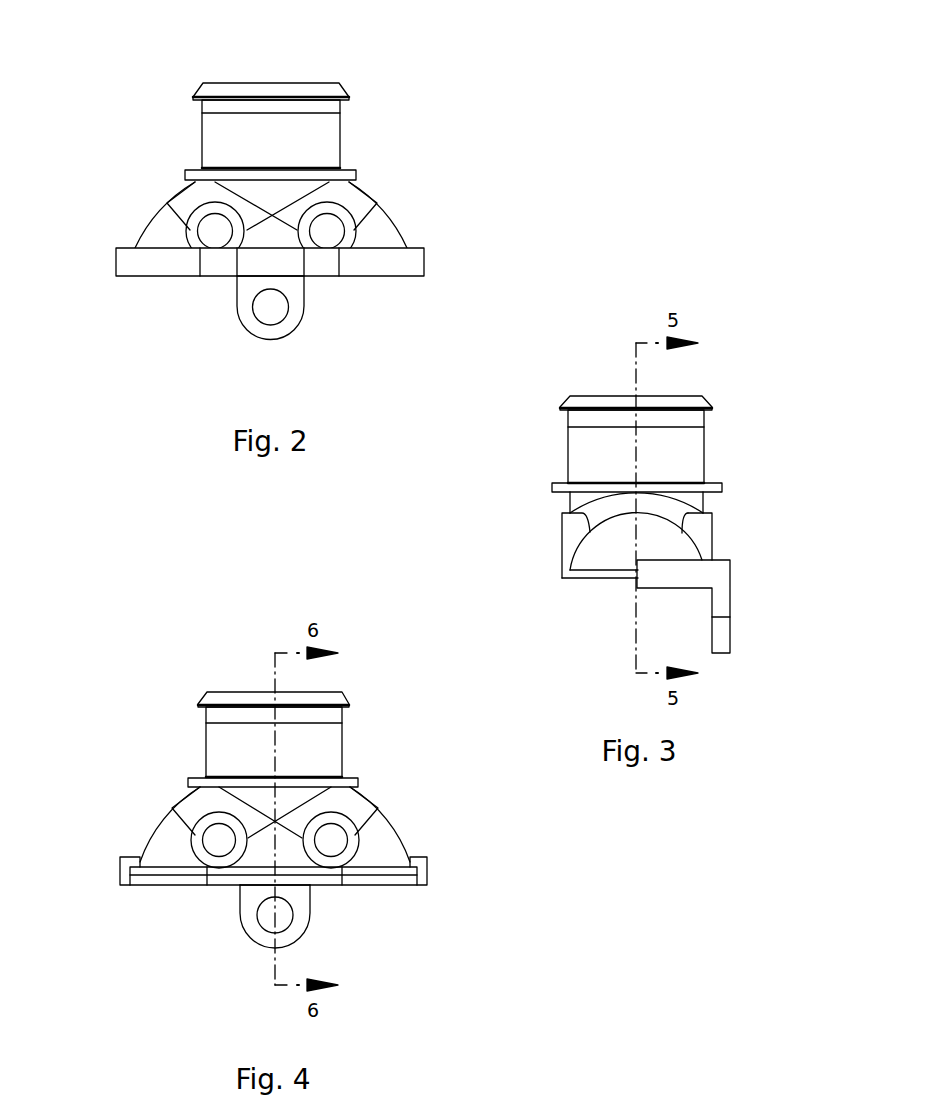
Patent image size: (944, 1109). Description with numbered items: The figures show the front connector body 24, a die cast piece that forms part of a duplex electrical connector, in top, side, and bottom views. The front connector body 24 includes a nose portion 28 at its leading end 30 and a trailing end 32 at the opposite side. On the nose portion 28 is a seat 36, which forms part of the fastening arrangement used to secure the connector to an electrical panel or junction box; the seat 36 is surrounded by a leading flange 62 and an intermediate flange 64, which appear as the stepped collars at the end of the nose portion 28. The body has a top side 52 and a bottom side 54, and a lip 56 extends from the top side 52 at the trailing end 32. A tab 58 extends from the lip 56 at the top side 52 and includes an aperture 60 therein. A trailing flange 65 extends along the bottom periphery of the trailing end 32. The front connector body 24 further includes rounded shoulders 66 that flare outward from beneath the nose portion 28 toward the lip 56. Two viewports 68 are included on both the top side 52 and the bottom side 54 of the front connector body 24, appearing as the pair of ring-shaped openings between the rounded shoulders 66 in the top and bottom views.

In FIG. 2, the front connector body 24 is at (126, 107).
In FIG. 3, the front connector body 24 is at (536, 430).
In FIG. 4, the front connector body 24 is at (140, 706).
In FIG. 2, the nose portion 28 is at (337, 140).
In FIG. 2, the leading end 30 is at (268, 83).
In FIG. 4, the leading end 30 is at (242, 692).
In FIG. 2, the trailing end 32 is at (320, 277).
In FIG. 4, the trailing end 32 is at (323, 885).
In FIG. 3, the seat 36 is at (661, 464).
In FIG. 3, the top side 52 is at (713, 533).
In FIG. 3, the bottom side 54 is at (562, 537).
In FIG. 4, the bottom side 54 is at (262, 858).
In FIG. 2, the lip 56 is at (424, 262).
In FIG. 4, the lip 56 is at (427, 871).
In FIG. 2, the tab 58 is at (257, 337).
In FIG. 4, the tab 58 is at (253, 943).
In FIG. 2, the aperture 60 is at (270, 307).
In FIG. 3, the leading flange 62 is at (712, 410).
In FIG. 3, the intermediate flange 64 is at (722, 488).
In FIG. 4, the trailing flange 65 is at (382, 882).
In FIG. 2, the rounded shoulders 66 is at (146, 217).
In FIG. 4, the rounded shoulders 66 is at (397, 823).
In FIG. 2, the viewports 68 is at (327, 231).